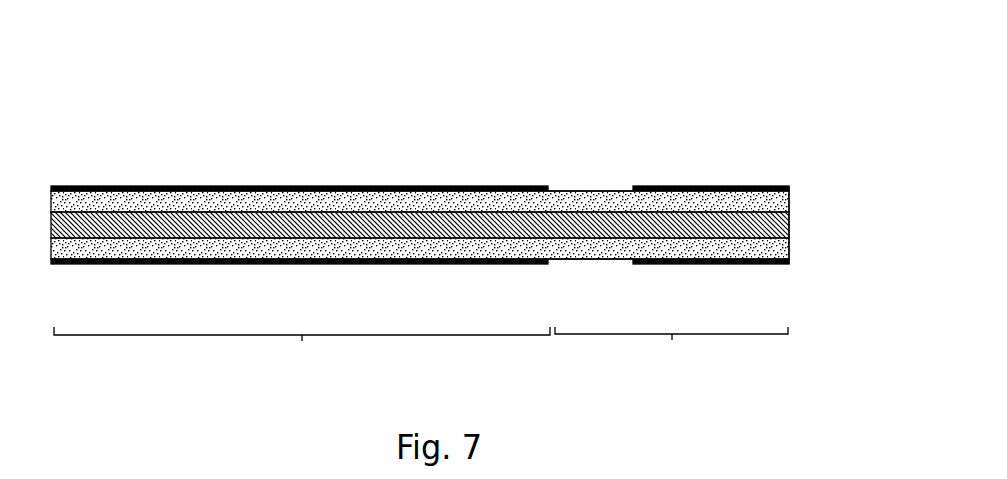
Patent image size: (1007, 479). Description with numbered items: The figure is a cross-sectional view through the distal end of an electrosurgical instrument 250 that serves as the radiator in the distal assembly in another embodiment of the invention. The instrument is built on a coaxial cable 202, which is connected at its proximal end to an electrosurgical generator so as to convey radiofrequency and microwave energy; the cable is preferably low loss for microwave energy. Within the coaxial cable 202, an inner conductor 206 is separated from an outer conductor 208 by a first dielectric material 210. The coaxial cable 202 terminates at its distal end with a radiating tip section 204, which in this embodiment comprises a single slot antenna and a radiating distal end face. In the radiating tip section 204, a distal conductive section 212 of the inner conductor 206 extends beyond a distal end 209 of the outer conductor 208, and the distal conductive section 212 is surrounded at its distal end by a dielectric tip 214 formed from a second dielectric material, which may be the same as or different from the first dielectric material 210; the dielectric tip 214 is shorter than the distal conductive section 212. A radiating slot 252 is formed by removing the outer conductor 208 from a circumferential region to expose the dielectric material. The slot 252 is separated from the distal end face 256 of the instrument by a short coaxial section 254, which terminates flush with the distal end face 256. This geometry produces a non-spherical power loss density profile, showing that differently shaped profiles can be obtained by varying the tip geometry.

The electrosurgical instrument 250 is at (731, 79).
The coaxial cable 202 is at (302, 349).
The radiating tip section 204 is at (671, 351).
The inner conductor 206 is at (128, 228).
The outer conductor 208 is at (207, 264).
The first dielectric material 210 is at (190, 200).
The distal end of the outer conductor 209 is at (547, 185).
The dielectric tip 214 is at (643, 203).
The distal conductive section 212 is at (712, 225).
The radiating slot 252 is at (593, 264).
The short coaxial section 254 is at (703, 265).
The distal end face 256 is at (790, 228).